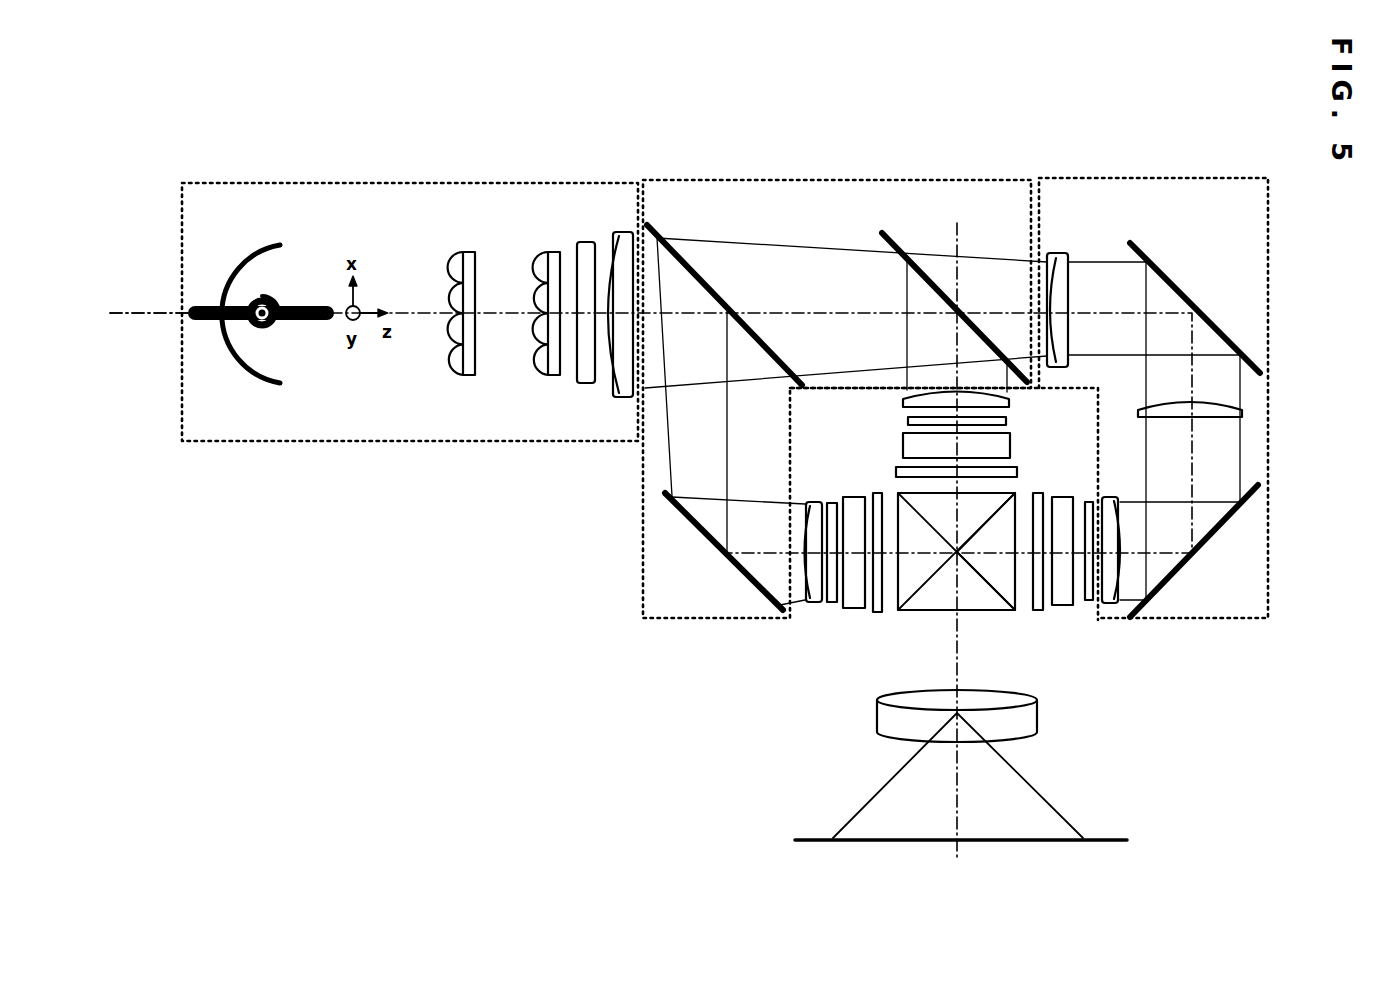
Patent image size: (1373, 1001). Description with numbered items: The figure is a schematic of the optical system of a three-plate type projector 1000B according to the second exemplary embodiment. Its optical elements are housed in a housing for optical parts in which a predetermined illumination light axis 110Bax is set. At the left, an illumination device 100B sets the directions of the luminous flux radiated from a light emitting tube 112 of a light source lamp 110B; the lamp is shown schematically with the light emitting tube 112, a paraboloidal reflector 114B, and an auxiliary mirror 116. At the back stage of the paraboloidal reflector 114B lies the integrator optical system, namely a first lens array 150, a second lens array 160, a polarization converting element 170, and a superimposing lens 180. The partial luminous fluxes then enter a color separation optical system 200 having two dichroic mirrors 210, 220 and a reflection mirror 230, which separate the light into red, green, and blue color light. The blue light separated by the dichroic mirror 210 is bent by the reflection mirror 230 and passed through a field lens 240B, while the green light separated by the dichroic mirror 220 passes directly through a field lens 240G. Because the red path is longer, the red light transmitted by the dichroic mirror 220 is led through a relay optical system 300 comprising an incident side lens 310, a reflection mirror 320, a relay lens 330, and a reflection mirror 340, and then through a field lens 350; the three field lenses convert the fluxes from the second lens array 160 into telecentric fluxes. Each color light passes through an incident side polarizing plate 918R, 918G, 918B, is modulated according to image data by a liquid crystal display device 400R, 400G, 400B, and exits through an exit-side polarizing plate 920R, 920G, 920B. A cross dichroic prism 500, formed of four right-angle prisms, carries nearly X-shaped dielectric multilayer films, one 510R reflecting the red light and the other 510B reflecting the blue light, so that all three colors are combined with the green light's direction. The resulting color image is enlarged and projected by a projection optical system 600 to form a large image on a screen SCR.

The projector 1000B is at (1106, 121).
The illumination device 100B is at (383, 184).
The light source lamp 110B is at (299, 391).
The illumination light axis 110Bax is at (138, 316).
The light emitting tube 112 is at (274, 348).
The paraboloidal reflector 114B is at (270, 375).
The auxiliary mirror 116 is at (286, 328).
The first lens array 150 is at (468, 252).
The second lens array 160 is at (556, 377).
The polarization converting element 170 is at (585, 242).
The superimposing lens 180 is at (620, 400).
The color separation optical system 200 is at (826, 182).
The dichroic mirror 210 is at (697, 268).
The dichroic mirror 220 is at (897, 256).
The reflection mirror 230 is at (668, 508).
The field lens 240B is at (812, 604).
The field lens 240G is at (905, 396).
The relay optical system 300 is at (1130, 181).
The incident side lens 310 is at (1060, 252).
The reflection mirror 320 is at (1158, 264).
The relay lens 330 is at (1245, 418).
The reflection mirror 340 is at (1256, 490).
The field lens 350 is at (1110, 614).
The liquid crystal display device 400B is at (852, 497).
The liquid crystal display device 400G is at (1012, 450).
The liquid crystal display device 400R is at (1062, 606).
The cross dichroic prism 500 is at (903, 612).
The dielectric multilayer film 510R is at (995, 514).
The dielectric multilayer film 510B is at (992, 588).
The projection optical system 600 is at (878, 718).
The incident side polarizing plate 918B is at (832, 604).
The incident side polarizing plate 918G is at (907, 420).
The incident side polarizing plate 918R is at (1090, 603).
The exit-side polarizing plate 920B is at (877, 614).
The exit-side polarizing plate 920G is at (896, 471).
The exit-side polarizing plate 920R is at (1038, 613).
The screen SCR is at (812, 839).